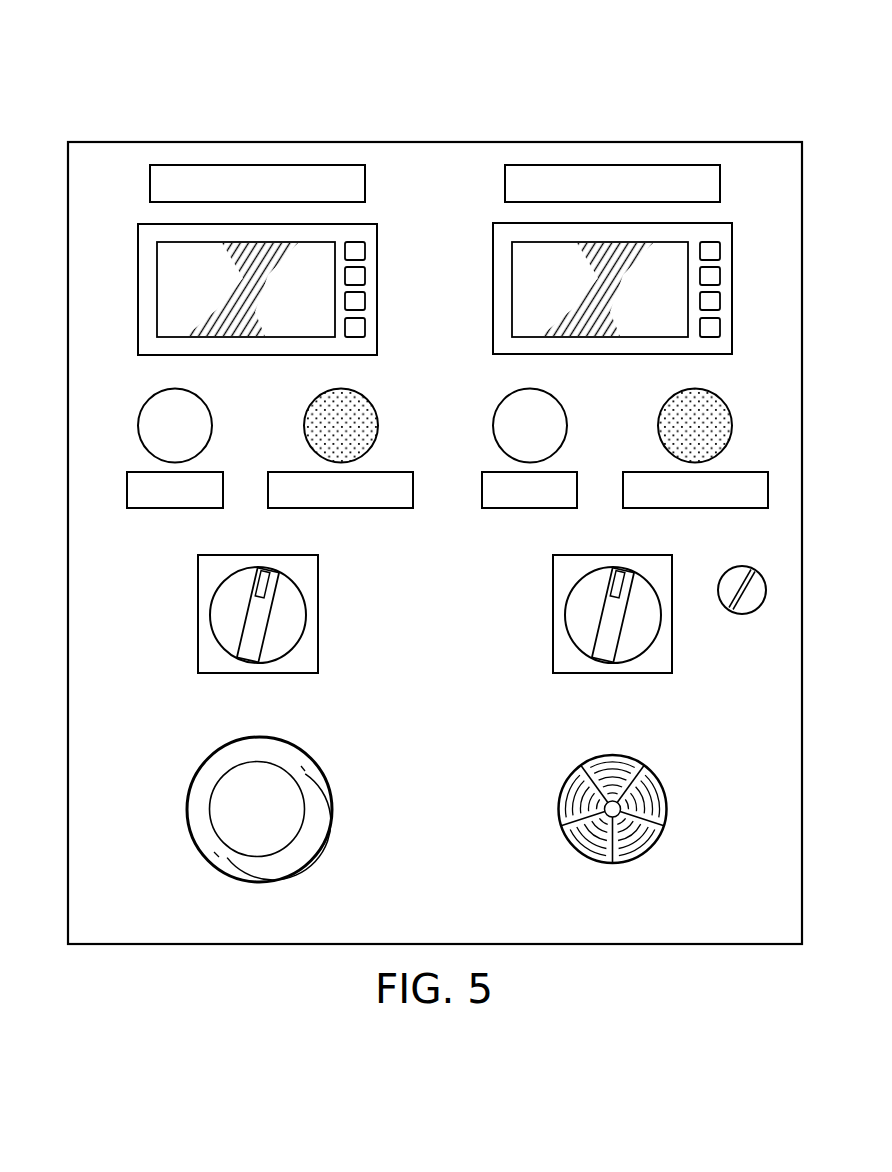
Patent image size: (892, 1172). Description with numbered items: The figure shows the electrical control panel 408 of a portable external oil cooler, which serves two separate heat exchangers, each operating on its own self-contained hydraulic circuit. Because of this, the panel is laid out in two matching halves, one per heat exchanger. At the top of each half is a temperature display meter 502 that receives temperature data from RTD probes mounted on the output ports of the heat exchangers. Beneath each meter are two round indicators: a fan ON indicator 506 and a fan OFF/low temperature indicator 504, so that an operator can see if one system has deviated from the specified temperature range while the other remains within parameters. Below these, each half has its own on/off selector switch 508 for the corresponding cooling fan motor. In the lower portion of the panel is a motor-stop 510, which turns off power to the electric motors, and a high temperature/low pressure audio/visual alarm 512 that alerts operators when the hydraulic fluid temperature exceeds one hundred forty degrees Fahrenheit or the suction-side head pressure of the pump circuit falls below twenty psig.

The electrical control panel 408 is at (376, 98).
The temperature display meter 502 is at (494, 290).
The fan OFF/low temperature indicator 504 is at (659, 424).
The fan ON indicator 506 is at (212, 423).
The on/off selector switch 508 is at (565, 612).
The motor-stop 510 is at (187, 808).
The high temperature/low pressure audio/visual alarm 512 is at (667, 809).